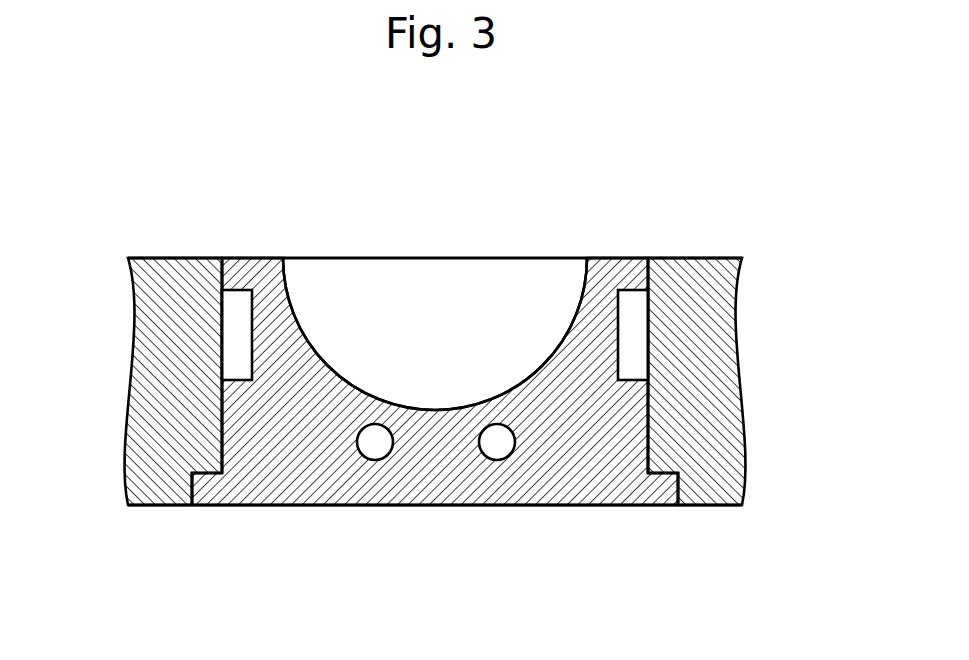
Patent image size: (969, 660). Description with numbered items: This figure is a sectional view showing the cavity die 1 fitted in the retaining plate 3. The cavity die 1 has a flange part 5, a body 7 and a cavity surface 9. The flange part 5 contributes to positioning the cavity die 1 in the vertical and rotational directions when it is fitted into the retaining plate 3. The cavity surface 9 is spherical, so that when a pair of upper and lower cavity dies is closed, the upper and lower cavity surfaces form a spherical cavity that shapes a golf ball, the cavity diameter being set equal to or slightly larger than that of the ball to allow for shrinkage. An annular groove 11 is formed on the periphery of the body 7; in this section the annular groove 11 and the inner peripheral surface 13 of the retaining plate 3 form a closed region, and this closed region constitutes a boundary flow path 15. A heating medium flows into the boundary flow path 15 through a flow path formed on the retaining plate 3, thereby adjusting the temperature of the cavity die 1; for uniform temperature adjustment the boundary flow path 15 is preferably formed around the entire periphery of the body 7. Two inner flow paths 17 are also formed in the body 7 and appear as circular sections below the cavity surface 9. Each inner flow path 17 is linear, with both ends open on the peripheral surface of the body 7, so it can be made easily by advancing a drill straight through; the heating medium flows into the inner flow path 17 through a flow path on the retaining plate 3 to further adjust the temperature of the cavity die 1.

The cavity die 1 is at (578, 512).
The retaining plate 3 is at (148, 448).
The flange part 5 is at (211, 497).
The body 7 is at (424, 430).
The cavity surface 9 is at (292, 305).
The annular groove 11 is at (237, 296).
The inner peripheral surface 13 is at (228, 360).
The boundary flow path 15 is at (230, 308).
The inner flow path 17 is at (376, 446).